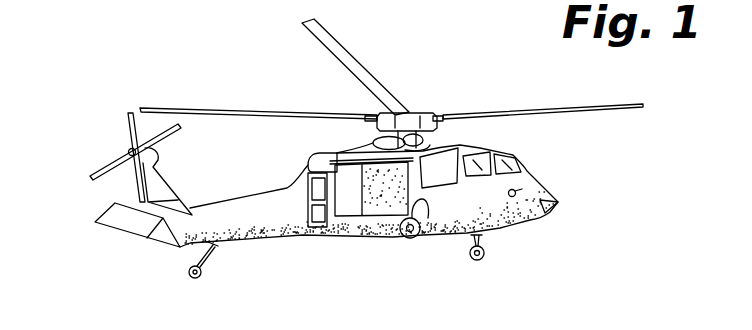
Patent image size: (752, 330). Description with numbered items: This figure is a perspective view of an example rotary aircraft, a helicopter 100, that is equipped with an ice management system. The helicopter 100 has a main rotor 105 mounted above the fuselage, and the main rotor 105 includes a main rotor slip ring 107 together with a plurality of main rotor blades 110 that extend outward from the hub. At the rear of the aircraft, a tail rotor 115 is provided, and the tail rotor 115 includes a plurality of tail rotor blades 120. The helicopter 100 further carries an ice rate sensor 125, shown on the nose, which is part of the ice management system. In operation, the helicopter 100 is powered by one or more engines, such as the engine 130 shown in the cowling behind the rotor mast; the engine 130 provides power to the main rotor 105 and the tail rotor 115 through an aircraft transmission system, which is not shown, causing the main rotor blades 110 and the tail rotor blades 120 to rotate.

The helicopter 100 is at (587, 240).
The main rotor 105 is at (431, 112).
The main rotor slip ring 107 is at (441, 132).
The main rotor blades 110 is at (342, 52).
The tail rotor 115 is at (121, 146).
The tail rotor blades 120 is at (101, 169).
The ice rate sensor 125 is at (514, 191).
The engine 130 is at (367, 153).